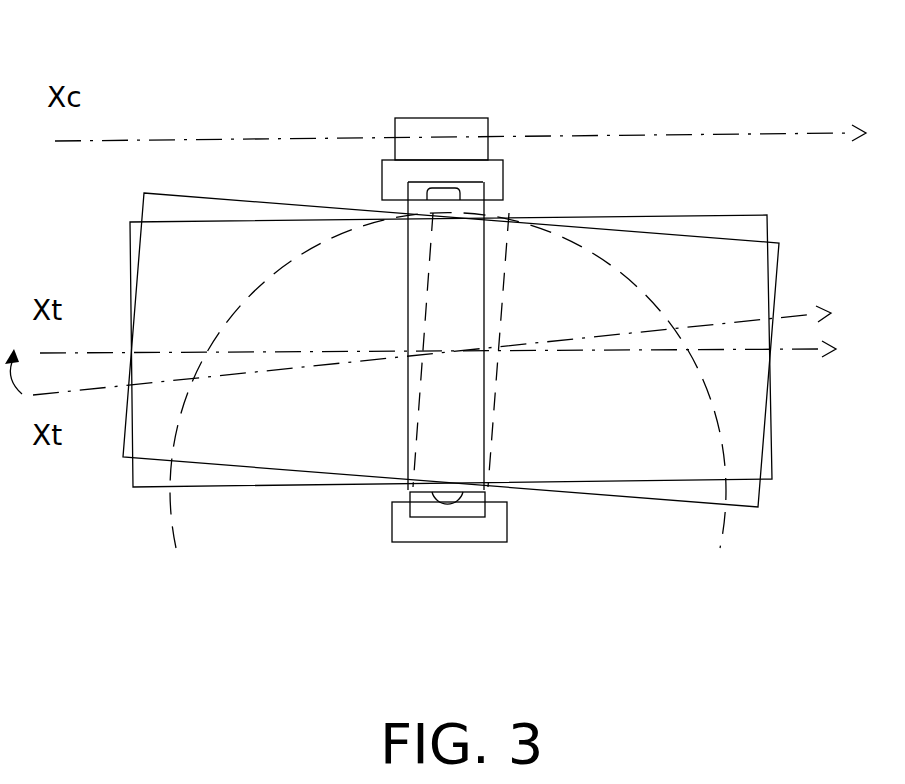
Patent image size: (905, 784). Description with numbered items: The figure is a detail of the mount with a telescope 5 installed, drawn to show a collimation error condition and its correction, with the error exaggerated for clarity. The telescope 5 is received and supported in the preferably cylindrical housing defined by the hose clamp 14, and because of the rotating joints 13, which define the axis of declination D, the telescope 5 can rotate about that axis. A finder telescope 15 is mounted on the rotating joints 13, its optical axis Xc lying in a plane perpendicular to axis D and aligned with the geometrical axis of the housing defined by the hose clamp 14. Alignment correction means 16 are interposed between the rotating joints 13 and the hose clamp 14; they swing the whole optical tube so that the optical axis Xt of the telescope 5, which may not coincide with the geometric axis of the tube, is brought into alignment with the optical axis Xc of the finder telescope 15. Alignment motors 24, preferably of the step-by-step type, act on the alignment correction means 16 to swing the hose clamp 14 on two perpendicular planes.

The telescope 5 is at (670, 215).
The rotating joints 13 is at (495, 525).
The hose clamp 14 is at (427, 450).
The finder telescope 15 is at (475, 118).
The alignment correction means 16 is at (412, 182).
The alignment motors 24 is at (467, 190).